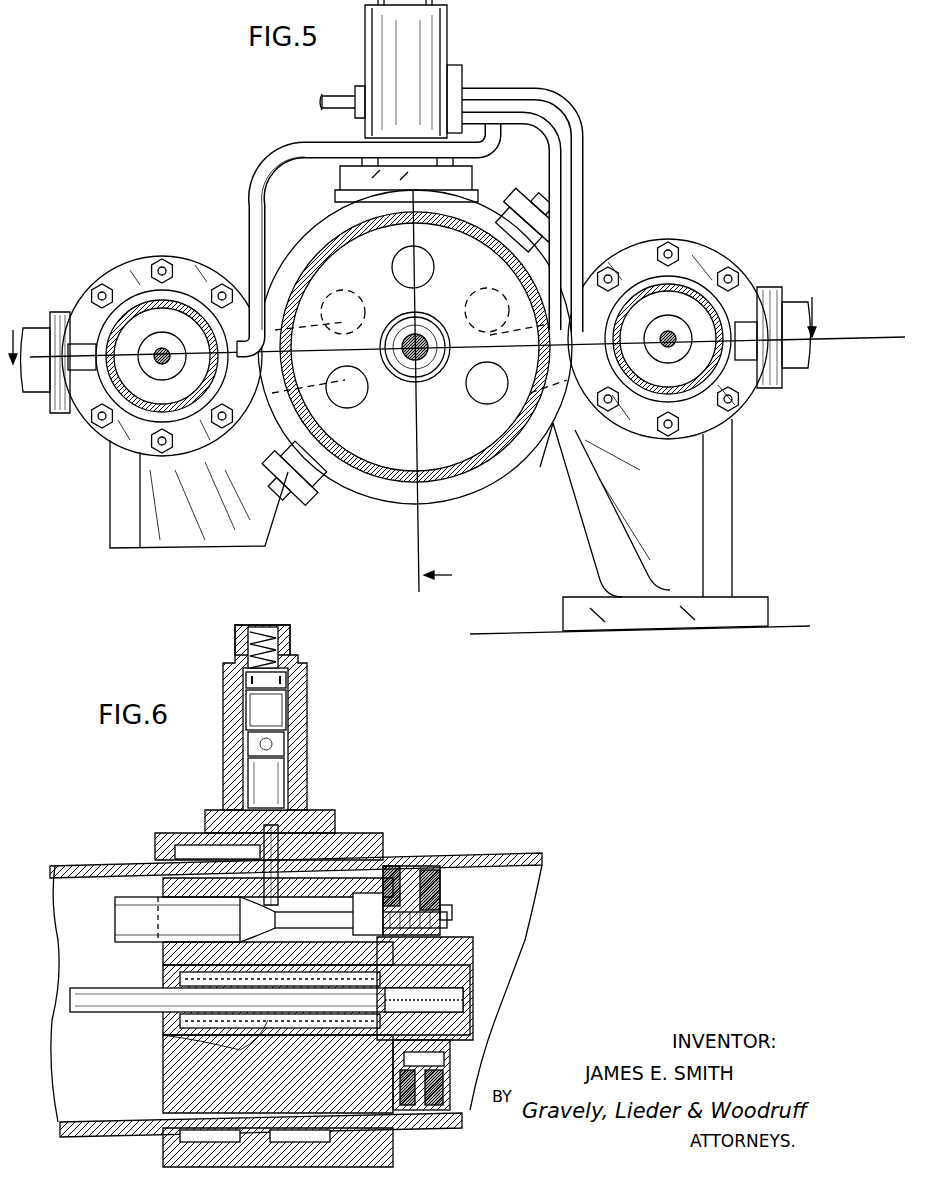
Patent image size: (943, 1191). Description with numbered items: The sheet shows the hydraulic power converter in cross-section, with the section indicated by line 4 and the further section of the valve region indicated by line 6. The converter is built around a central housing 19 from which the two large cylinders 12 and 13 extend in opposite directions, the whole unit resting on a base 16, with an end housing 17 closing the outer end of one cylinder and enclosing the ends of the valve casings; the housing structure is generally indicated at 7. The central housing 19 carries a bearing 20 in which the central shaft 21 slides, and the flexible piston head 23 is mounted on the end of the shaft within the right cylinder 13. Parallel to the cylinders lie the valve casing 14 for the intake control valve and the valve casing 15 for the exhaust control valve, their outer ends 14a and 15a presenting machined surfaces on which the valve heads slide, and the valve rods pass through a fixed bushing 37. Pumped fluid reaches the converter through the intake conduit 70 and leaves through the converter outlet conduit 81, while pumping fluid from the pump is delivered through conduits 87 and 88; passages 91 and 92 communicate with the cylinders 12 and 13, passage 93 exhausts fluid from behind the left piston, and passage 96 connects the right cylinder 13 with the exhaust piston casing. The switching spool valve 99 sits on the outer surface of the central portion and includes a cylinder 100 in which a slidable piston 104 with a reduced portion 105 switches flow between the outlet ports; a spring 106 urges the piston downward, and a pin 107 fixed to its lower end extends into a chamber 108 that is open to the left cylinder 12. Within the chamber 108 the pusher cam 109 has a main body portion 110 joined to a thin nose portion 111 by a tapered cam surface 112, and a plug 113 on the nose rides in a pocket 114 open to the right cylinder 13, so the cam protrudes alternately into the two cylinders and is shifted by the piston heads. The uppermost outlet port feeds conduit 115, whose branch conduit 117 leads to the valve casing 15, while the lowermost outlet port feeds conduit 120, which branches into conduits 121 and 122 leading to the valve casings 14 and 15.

In FIG. 5, the section line 4 is at (410, 319).
In FIG. 5, the section line 6 is at (443, 576).
In FIG. 5, the pump housing 7 is at (571, 442).
In FIG. 6, the cylinder 12 is at (296, 995).
In FIG. 6, the cylinder 13 is at (506, 987).
In FIG. 5, the valve casing 14 is at (107, 266).
In FIG. 5, the valve casing outer end 14a is at (163, 252).
In FIG. 5, the valve casing 15 is at (740, 257).
In FIG. 5, the valve casing outer end 15a is at (685, 242).
In FIG. 5, the base 16 is at (168, 548).
In FIG. 5, the end housing 17 is at (370, 500).
In FIG. 5, the central housing 19 is at (478, 470).
In FIG. 6, the central housing 19 is at (163, 1070).
In FIG. 5, the bearing 20 is at (445, 347).
In FIG. 6, the bearing 20 is at (185, 1040).
In FIG. 5, the central shaft 21 is at (405, 363).
In FIG. 6, the central shaft 21 is at (100, 988).
In FIG. 6, the flexible piston head 23 is at (475, 950).
In FIG. 5, the fixed bushing 37 is at (145, 392).
In FIG. 5, the intake conduit 70 is at (35, 394).
In FIG. 5, the converter outlet conduit 81 is at (795, 372).
In FIG. 5, the conduit 87 is at (78, 343).
In FIG. 5, the conduit 88 is at (335, 108).
In FIG. 5, the passage 91 is at (352, 410).
In FIG. 5, the passage 92 is at (355, 292).
In FIG. 5, the passage 93 is at (478, 396).
In FIG. 5, the passage 96 is at (470, 300).
In FIG. 5, the switching spool valve 99 is at (358, 64).
In FIG. 6, the switching spool valve 99 is at (312, 763).
In FIG. 5, the cylinder 100 is at (447, 52).
In FIG. 6, the cylinder 100 is at (305, 725).
In FIG. 6, the slidable piston 104 is at (245, 705).
In FIG. 6, the reduced portion 105 is at (245, 752).
In FIG. 6, the spring 106 is at (293, 633).
In FIG. 6, the pin 107 is at (210, 822).
In FIG. 6, the chamber 108 is at (280, 935).
In FIG. 6, the pusher cam 109 is at (118, 915).
In FIG. 6, the main body portion 110 is at (177, 919).
In FIG. 6, the nose portion 111 is at (361, 910).
In FIG. 6, the tapered cam surface 112 is at (262, 910).
In FIG. 6, the plug 113 is at (380, 885).
In FIG. 6, the pocket 114 is at (316, 990).
In FIG. 5, the conduit 115 is at (478, 80).
In FIG. 6, the conduit 115 is at (237, 722).
In FIG. 5, the conduit 117 is at (575, 230).
In FIG. 5, the conduit 120 is at (495, 104).
In FIG. 5, the conduit 121 is at (290, 150).
In FIG. 5, the conduit 122 is at (535, 118).
In FIG. 6, the conduit 122 is at (240, 768).